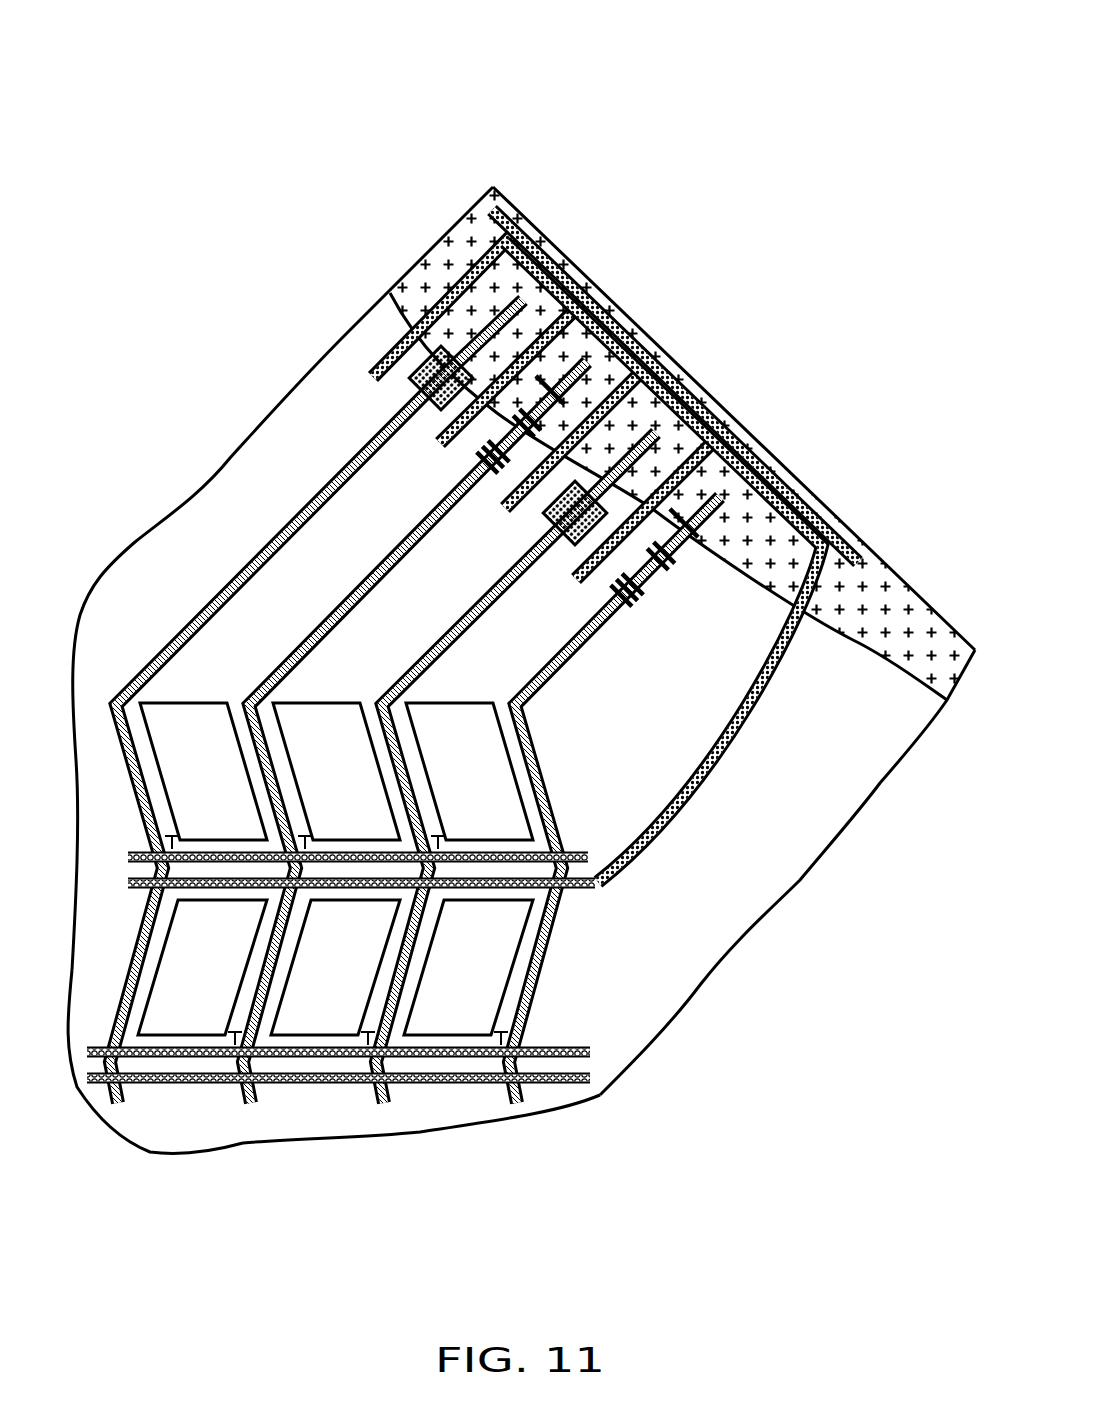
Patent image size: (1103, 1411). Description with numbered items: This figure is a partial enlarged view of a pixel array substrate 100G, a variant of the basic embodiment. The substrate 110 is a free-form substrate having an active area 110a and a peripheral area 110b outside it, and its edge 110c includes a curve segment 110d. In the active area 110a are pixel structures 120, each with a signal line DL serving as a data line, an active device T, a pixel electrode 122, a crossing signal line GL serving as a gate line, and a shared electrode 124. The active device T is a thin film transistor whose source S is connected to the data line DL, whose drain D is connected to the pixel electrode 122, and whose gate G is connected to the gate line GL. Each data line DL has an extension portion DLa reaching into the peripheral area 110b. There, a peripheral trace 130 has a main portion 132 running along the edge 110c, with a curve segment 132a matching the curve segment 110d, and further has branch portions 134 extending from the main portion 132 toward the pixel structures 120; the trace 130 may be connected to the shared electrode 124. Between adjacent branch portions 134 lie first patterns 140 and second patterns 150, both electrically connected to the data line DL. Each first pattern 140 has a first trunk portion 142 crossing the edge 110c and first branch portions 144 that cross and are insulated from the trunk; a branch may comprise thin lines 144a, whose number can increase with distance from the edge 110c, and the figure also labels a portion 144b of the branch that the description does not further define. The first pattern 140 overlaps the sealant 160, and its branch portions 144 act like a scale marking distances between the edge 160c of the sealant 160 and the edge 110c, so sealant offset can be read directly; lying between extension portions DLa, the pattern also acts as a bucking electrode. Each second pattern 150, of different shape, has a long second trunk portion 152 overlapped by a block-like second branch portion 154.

The pixel array substrate 100G is at (940, 1215).
The substrate 110 is at (521, 621).
The active area 110a is at (570, 975).
The peripheral area 110b is at (260, 466).
The edge 110c is at (732, 369).
The curve segment 110d is at (531, 221).
The pixel structure 120 is at (136, 18).
The active device T is at (399, 528).
The pixel electrode 122 is at (432, 815).
The shared electrode 124 is at (337, 587).
The signal line GL is at (138, 855).
The signal line DL is at (529, 661).
The extension portion DLa is at (529, 606).
The first pattern 140 is at (454, 606).
The first trunk portion 142 is at (497, 433).
The first branch portion 144 is at (430, 633).
The thin line 144a is at (480, 400).
The second segment of second conductive pattern 144b is at (505, 418).
The second pattern 150 is at (595, 708).
The second trunk portion 152 is at (560, 455).
The second branch portion 154 is at (560, 430).
The peripheral trace 130 is at (548, 360).
The main portion 132 is at (548, 360).
The curve segment 132a is at (505, 212).
The branch portion 134 is at (690, 472).
The sealant 160 is at (685, 492).
The edge of sealant 160c is at (880, 658).
The source S is at (438, 838).
The drain D is at (442, 840).
The gate G is at (437, 843).